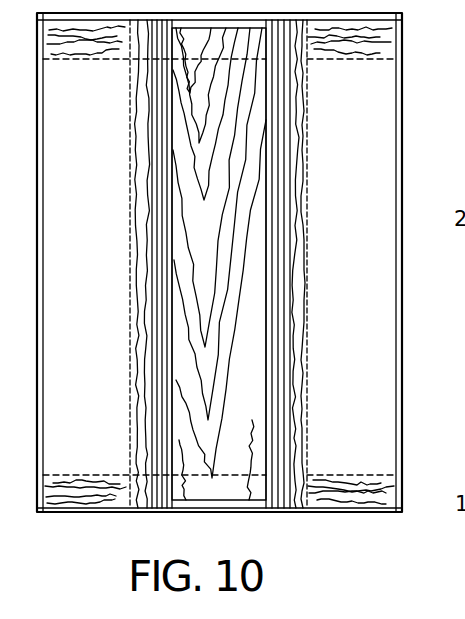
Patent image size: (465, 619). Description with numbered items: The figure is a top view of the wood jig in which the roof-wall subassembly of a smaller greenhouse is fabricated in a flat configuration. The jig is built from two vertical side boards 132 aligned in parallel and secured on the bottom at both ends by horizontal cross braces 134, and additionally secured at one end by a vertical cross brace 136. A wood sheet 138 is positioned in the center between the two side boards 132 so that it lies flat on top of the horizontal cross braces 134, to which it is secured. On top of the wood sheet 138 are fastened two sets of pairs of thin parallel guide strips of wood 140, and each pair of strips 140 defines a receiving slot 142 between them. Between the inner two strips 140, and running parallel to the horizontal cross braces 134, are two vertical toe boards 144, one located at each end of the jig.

The vertical side board 132 is at (400, 343).
The horizontal cross brace 134 is at (115, 56).
The vertical cross brace 136 is at (374, 50).
The wood sheet 138 is at (311, 330).
The guide strip 140 is at (154, 198).
The receiving slot 142 is at (164, 223).
The vertical toe board 144 is at (203, 54).